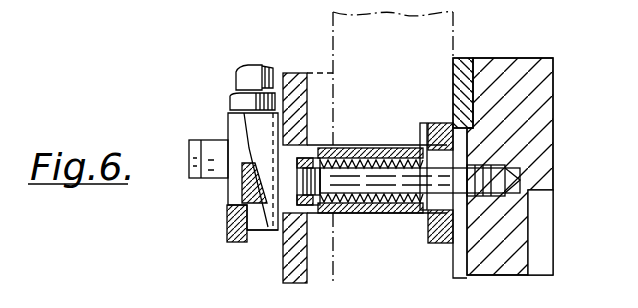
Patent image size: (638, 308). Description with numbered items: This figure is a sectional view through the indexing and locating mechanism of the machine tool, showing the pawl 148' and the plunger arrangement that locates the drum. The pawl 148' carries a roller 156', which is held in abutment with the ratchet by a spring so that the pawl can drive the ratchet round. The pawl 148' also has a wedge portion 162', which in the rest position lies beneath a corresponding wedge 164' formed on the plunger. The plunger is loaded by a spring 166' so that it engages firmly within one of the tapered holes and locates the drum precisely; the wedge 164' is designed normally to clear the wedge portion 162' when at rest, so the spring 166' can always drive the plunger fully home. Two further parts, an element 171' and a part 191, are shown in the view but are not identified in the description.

The roller 156' is at (197, 135).
The pawl 148' is at (222, 152).
The wedge 164' is at (219, 247).
The wedge portion 162' is at (252, 262).
The spring 166' is at (372, 156).
The end flange 171' is at (432, 162).
The support block 191 is at (475, 158).